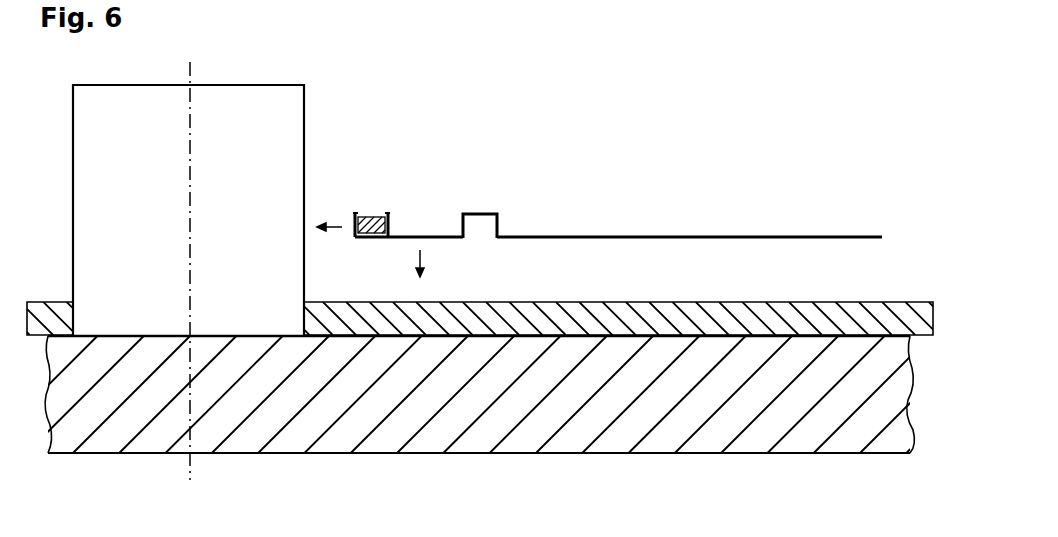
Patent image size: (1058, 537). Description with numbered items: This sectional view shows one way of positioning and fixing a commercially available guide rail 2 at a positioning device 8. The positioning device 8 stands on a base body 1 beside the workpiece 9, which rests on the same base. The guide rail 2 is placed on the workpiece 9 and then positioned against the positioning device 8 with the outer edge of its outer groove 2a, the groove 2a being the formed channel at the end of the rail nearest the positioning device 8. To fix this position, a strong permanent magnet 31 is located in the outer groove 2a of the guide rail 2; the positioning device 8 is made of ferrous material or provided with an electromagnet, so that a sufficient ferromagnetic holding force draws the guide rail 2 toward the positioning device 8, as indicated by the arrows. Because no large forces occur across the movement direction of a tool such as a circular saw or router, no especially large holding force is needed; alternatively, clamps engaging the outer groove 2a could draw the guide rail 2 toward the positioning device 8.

The base body 1 is at (738, 453).
The guide rail 2 is at (550, 236).
The outer groove 2a is at (383, 237).
The positioning device 8 is at (304, 133).
The workpiece 9 is at (548, 301).
The insert element 31 is at (370, 218).